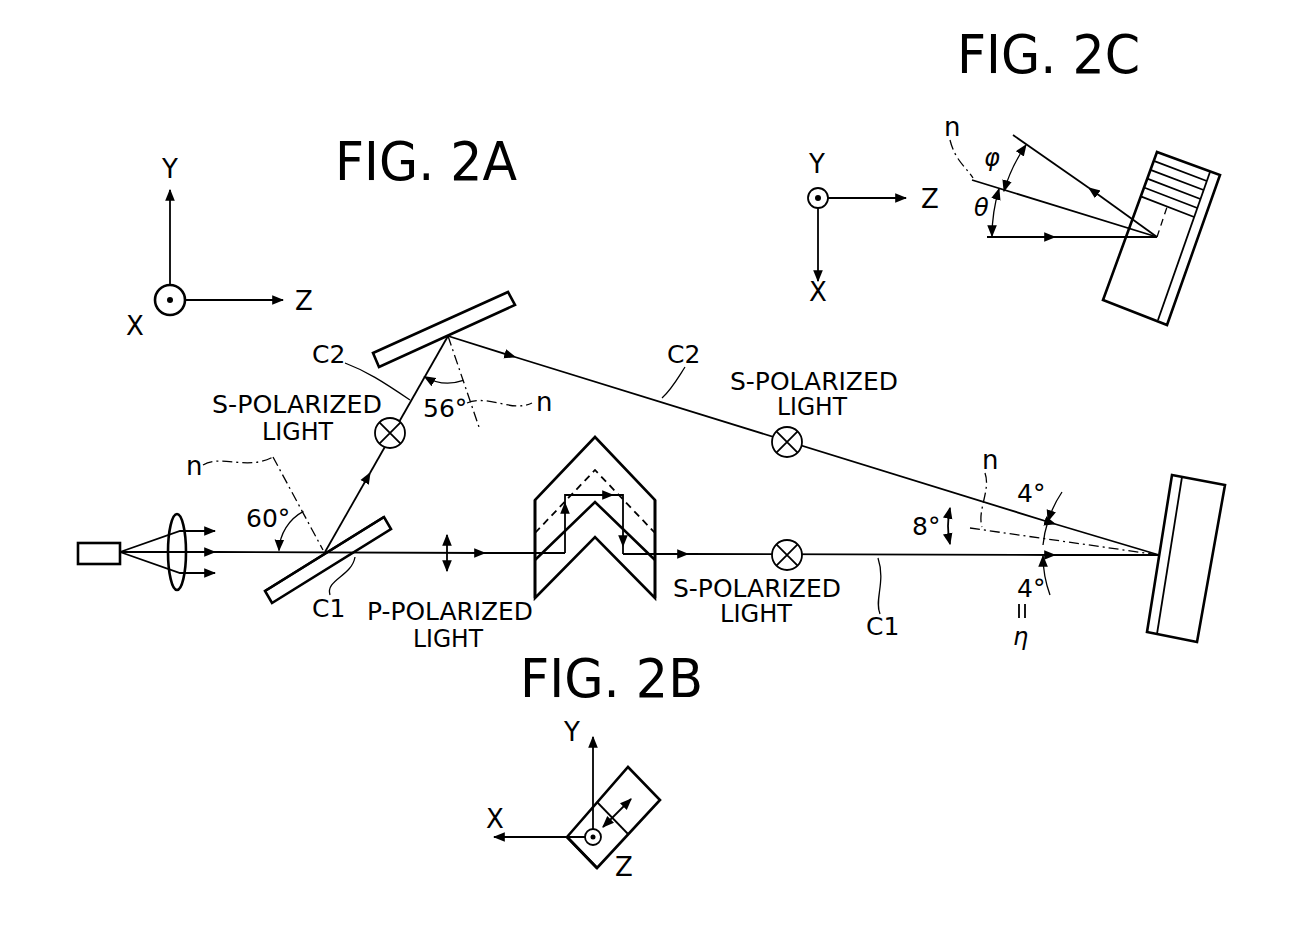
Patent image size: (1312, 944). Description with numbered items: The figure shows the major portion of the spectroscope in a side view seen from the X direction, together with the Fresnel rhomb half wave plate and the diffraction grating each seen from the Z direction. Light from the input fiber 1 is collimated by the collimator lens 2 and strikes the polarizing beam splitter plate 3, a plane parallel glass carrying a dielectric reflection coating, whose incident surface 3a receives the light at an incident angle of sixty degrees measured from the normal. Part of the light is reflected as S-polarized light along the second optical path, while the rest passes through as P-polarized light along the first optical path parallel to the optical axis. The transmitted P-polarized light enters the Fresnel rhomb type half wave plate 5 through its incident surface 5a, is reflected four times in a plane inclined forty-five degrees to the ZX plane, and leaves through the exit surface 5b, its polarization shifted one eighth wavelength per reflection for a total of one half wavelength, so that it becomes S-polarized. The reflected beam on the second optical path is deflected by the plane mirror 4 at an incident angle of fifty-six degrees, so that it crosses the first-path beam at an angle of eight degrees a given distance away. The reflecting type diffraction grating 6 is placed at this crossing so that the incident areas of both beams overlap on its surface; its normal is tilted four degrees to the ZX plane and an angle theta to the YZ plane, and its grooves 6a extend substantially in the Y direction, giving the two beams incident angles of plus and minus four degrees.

In FIG. 2A, the input fiber 1 is at (102, 542).
In FIG. 2A, the collimator lens 2 is at (177, 591).
In FIG. 2A, the polarizing beam splitter plate 3 is at (295, 600).
In FIG. 2A, the incident surface 3a is at (272, 577).
In FIG. 2A, the plane mirror 4 is at (412, 336).
In FIG. 2A, the Fresnel rhomb type half wave plate 5 is at (634, 472).
In FIG. 2B, the Fresnel rhomb type half wave plate 5 is at (650, 784).
In FIG. 2A, the incident surface 5a is at (535, 518).
In FIG. 2A, the exit surface 5b is at (655, 517).
In FIG. 2B, the exit surface 5b is at (577, 854).
In FIG. 2A, the diffraction grating 6 is at (1200, 477).
In FIG. 2C, the diffraction grating 6 is at (1200, 252).
In FIG. 2C, the grooves 6a is at (1185, 175).